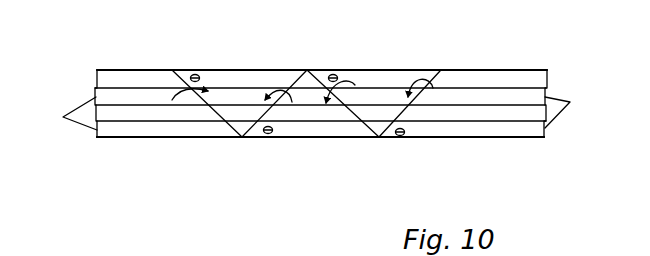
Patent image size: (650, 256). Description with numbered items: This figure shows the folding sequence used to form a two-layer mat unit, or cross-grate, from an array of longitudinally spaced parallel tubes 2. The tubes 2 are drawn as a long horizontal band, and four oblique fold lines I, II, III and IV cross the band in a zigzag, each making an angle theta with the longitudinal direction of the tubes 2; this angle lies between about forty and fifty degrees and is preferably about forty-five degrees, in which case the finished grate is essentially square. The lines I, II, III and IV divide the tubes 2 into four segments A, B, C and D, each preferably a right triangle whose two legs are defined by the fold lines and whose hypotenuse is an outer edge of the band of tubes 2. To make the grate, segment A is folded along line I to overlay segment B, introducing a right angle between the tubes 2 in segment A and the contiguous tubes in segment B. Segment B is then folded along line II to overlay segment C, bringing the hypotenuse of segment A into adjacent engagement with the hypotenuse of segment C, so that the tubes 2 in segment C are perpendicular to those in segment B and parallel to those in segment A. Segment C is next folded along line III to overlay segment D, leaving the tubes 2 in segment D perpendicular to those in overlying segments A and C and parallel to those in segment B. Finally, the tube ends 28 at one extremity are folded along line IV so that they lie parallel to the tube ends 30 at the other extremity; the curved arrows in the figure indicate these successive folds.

The longitudinally spaced parallel tubes 2 is at (134, 87).
The tube ends 28 is at (65, 113).
The tube ends 30 is at (577, 108).
The segment A is at (473, 137).
The segment B is at (367, 70).
The segment C is at (297, 137).
The segment D is at (258, 70).
The fold line I is at (439, 101).
The fold line II is at (361, 100).
The fold line III is at (287, 116).
The fold line IV is at (164, 114).